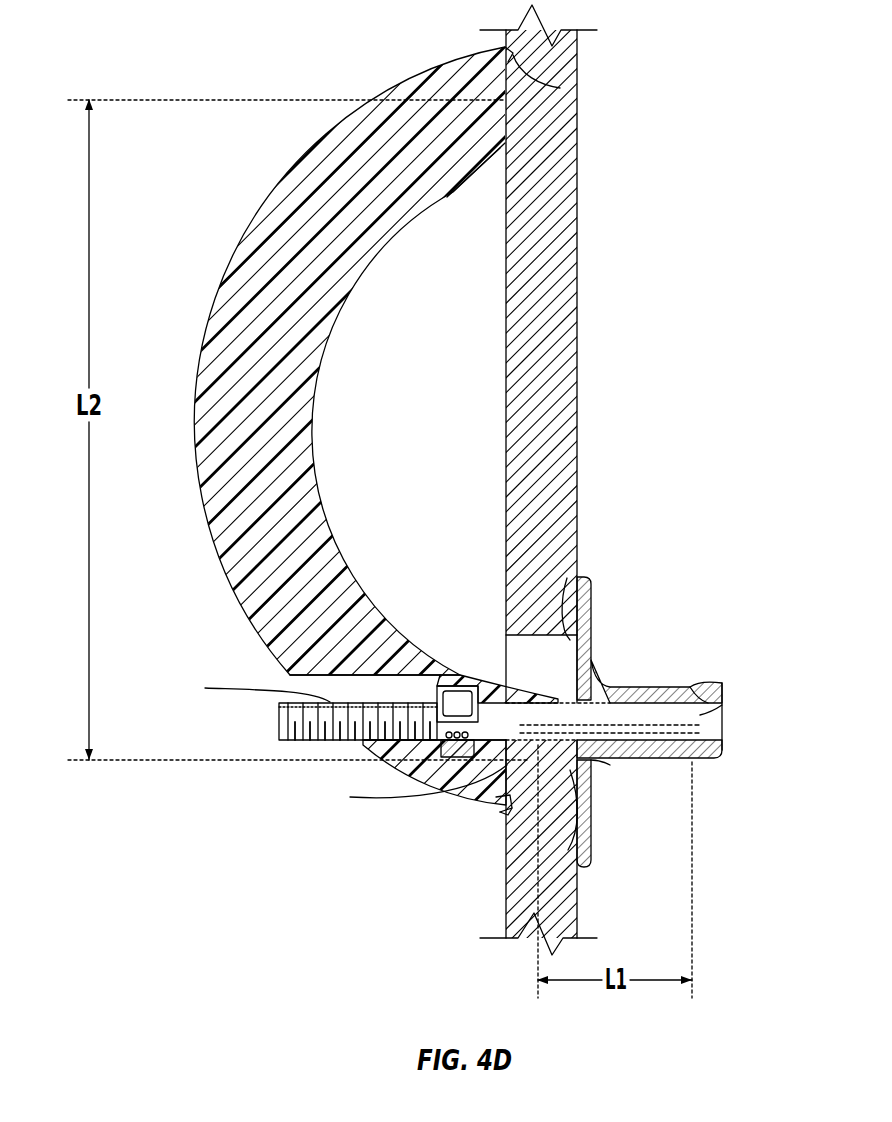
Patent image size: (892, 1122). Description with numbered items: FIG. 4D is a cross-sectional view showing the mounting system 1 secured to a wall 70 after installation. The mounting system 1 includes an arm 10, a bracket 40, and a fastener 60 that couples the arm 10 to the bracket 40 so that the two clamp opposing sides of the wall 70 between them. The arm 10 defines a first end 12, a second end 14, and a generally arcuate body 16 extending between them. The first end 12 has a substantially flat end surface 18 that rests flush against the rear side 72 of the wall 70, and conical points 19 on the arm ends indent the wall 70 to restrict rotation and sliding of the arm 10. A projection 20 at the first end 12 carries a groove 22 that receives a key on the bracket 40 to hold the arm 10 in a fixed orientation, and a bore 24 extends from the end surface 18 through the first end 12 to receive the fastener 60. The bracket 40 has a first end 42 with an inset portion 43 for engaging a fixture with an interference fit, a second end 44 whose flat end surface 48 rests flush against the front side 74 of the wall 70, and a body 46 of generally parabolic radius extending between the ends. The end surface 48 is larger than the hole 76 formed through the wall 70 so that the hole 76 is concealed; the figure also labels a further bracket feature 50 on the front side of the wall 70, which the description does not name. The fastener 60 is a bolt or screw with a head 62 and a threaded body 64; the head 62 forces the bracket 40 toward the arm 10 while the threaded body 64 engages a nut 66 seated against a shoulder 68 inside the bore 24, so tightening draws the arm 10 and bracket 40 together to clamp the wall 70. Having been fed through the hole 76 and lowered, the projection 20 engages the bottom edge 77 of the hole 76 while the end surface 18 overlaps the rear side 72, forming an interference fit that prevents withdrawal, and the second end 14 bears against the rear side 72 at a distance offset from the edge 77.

The mounting system 1 is at (325, 72).
The arm 10 is at (446, 507).
The first end 12 is at (425, 800).
The second end 14 is at (445, 55).
The arcuate body 16 is at (240, 370).
The end surface 18 is at (497, 818).
The points 19 is at (560, 88).
The projection 20 is at (530, 690).
The groove 22 is at (460, 742).
The bore 24 is at (330, 700).
The bracket 40 is at (625, 768).
The first end 42 is at (718, 680).
The inset portion 43 is at (690, 690).
The second end 44 is at (592, 603).
The body 46 is at (605, 762).
The end surface 48 is at (565, 600).
The lower flange 50 is at (590, 768).
The fastener 60 is at (665, 748).
The head 62 is at (710, 723).
The threaded body 64 is at (330, 738).
The nut 66 is at (428, 700).
The shoulder 68 is at (455, 715).
The wall 70 is at (565, 160).
The rear side 72 is at (505, 350).
The front side 74 is at (575, 330).
The hole 76 is at (507, 660).
The edge 77 is at (490, 780).